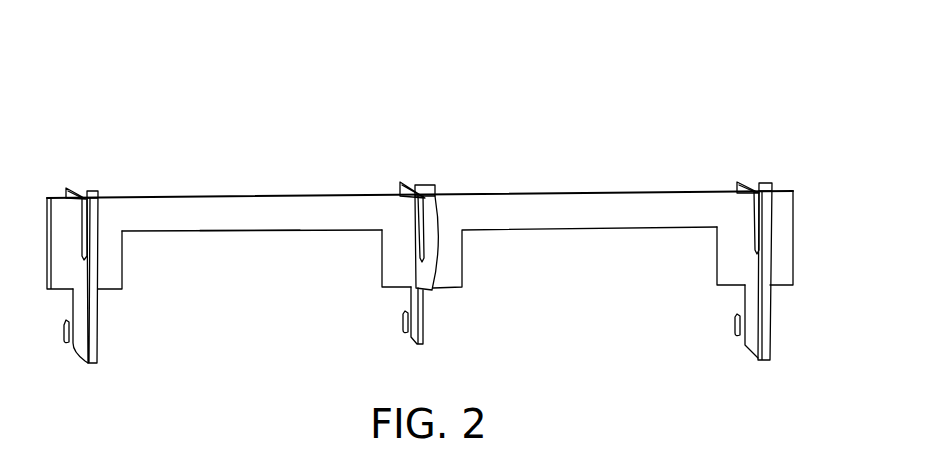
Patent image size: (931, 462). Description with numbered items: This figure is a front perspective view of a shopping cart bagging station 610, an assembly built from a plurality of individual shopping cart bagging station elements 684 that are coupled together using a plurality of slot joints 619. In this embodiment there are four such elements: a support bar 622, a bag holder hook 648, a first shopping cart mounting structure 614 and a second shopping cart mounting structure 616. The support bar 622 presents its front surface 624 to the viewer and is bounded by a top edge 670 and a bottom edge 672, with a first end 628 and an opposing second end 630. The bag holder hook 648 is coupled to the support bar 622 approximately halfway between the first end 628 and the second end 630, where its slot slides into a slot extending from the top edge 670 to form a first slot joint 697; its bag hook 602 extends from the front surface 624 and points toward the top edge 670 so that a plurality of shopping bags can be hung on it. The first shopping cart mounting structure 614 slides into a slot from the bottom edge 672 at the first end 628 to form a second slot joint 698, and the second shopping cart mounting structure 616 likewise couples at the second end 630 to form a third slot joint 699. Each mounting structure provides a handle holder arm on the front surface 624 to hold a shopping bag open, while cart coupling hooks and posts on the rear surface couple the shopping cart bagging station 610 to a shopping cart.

The shopping cart bagging station 610 is at (468, 78).
The shopping cart bagging station elements 684 is at (45, 186).
The top edge 670 is at (312, 197).
The front surface 624 is at (310, 224).
The bottom edge 672 is at (248, 232).
The support bar 622 is at (608, 200).
The slot joints 619 is at (796, 185).
The first shopping cart mounting structure 614 is at (77, 343).
The second slot joint 698 is at (106, 212).
The first end 628 is at (79, 177).
The bag holder hook 648 is at (425, 190).
The first slot joint 697 is at (441, 229).
The bag hook 602 is at (423, 242).
The second shopping cart mounting structure 616 is at (750, 333).
The third slot joint 699 is at (745, 227).
The second end 630 is at (743, 180).